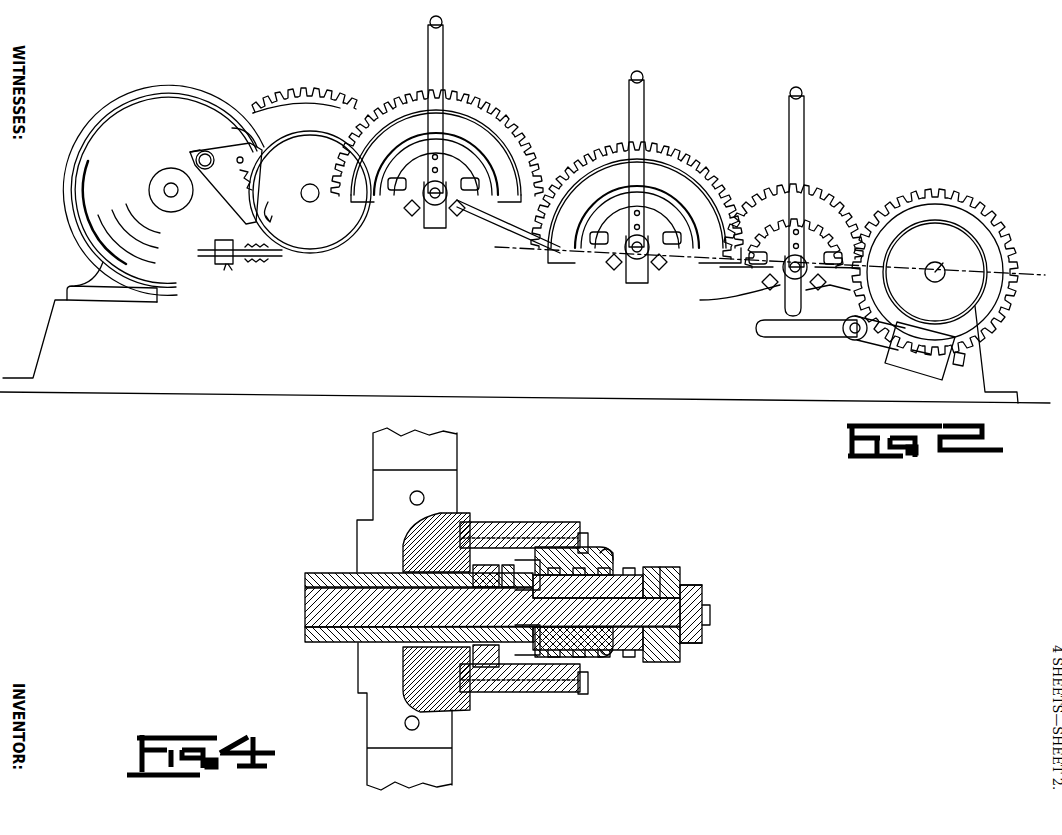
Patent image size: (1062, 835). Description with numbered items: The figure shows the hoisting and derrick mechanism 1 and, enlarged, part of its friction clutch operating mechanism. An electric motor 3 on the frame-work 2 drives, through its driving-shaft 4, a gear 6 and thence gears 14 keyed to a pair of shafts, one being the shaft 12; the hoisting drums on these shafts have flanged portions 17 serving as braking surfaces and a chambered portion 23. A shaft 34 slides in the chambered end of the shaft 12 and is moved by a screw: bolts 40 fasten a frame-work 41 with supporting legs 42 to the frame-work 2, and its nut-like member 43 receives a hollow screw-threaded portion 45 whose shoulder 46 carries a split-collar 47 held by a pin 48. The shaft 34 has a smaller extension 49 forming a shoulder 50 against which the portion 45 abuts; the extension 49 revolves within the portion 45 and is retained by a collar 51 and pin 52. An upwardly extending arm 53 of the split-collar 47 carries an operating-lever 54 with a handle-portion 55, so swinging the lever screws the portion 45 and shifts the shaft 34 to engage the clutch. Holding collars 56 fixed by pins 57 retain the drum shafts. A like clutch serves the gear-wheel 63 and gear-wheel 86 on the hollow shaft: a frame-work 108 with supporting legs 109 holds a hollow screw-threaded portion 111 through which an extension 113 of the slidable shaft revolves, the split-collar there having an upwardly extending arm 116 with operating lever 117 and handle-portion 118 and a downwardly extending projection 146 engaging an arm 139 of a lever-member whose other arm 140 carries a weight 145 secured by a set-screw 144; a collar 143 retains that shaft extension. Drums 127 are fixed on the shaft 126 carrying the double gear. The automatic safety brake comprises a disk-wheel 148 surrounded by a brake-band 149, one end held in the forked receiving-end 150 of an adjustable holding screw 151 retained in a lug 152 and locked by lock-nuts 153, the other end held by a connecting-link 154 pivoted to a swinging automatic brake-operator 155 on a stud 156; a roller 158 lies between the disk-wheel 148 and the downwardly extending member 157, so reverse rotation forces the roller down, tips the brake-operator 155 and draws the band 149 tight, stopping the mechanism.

In FIG. 2, the hoisting and derrick mechanism 1 is at (235, 164).
In FIG. 2, the frame-work 2 is at (98, 384).
In FIG. 4, the frame-work 2 is at (450, 770).
In FIG. 2, the electric motor 3 is at (173, 88).
In FIG. 2, the driving-shaft 4 is at (163, 191).
In FIG. 2, the gear 6 is at (306, 108).
In FIG. 4, the shaft 12 is at (318, 645).
In FIG. 2, the gears 14 is at (606, 156).
In FIG. 2, the flanged portions 17 is at (661, 165).
In FIG. 2, the cut-away or chambered portion 23 is at (666, 222).
In FIG. 4, the slidable shaft 34 is at (538, 520).
In FIG. 2, the bolts 40 is at (668, 285).
In FIG. 4, the bolts 40 is at (588, 694).
In FIG. 2, the frame-work 41 is at (661, 271).
In FIG. 4, the supporting legs 42 is at (490, 693).
In FIG. 4, the nut-like member 43 is at (597, 720).
In FIG. 4, the hollow screw-threaded portion 45 is at (630, 540).
In FIG. 4, the shoulder 46 is at (540, 660).
In FIG. 2, the split-collar 47 is at (666, 258).
In FIG. 4, the split-collar 47 is at (672, 657).
In FIG. 4, the pin 48 is at (660, 567).
In FIG. 2, the extension 49 is at (622, 284).
In FIG. 4, the extension 49 is at (702, 607).
In FIG. 4, the shoulder 50 is at (530, 660).
In FIG. 2, the collar 51 is at (600, 248).
In FIG. 4, the collar 51 is at (702, 588).
In FIG. 4, the pin 52 is at (710, 615).
In FIG. 2, the upwardly extending arm 53 is at (625, 213).
In FIG. 2, the operating-lever 54 is at (645, 112).
In FIG. 2, the handle-portion 55 is at (643, 78).
In FIG. 4, the holding collars 56 is at (520, 560).
In FIG. 4, the pins 57 is at (498, 560).
In FIG. 2, the gear-wheel 63 is at (770, 198).
In FIG. 2, the gear-wheel 86 is at (811, 232).
In FIG. 2, the frame-work 108 is at (812, 274).
In FIG. 2, the supporting legs 109 is at (832, 300).
In FIG. 2, the hollow screw-threaded portion 111 is at (780, 300).
In FIG. 2, the extension 113 is at (808, 262).
In FIG. 2, the upwardly extending arm 116 is at (785, 272).
In FIG. 2, the operating lever 117 is at (804, 125).
In FIG. 2, the handle-portion 118 is at (802, 95).
In FIG. 2, the shaft 126 is at (940, 262).
In FIG. 2, the drums 127 is at (962, 232).
In FIG. 2, the arm 139 is at (782, 338).
In FIG. 2, the arm 140 is at (878, 340).
In FIG. 2, the collar 143 is at (860, 337).
In FIG. 2, the set-screw 144 is at (925, 352).
In FIG. 2, the weight 145 is at (975, 340).
In FIG. 2, the downwardly extending projection 146 is at (790, 318).
In FIG. 2, the disk-wheel 148 is at (318, 133).
In FIG. 2, the brake-band 149 is at (290, 128).
In FIG. 2, the forked receiving-end 150 is at (258, 253).
In FIG. 2, the adjustable holding screw 151 is at (212, 258).
In FIG. 2, the lug 152 is at (234, 264).
In FIG. 2, the lock-nuts 153 is at (240, 264).
In FIG. 2, the connecting-link 154 is at (232, 128).
In FIG. 2, the swinging automatic brake-operator 155 is at (200, 153).
In FIG. 2, the stud 156 is at (207, 152).
In FIG. 2, the downwardly extending member 157 is at (236, 200).
In FIG. 2, the roller 158 is at (252, 160).